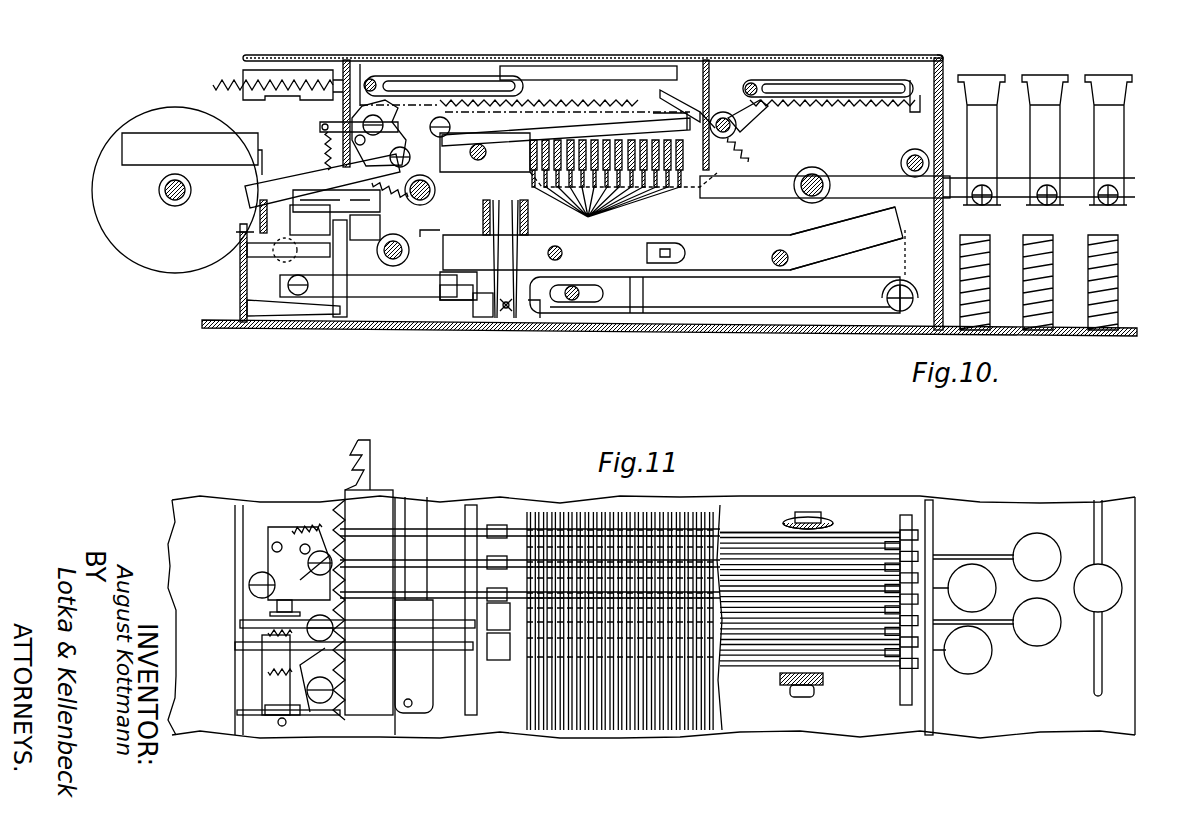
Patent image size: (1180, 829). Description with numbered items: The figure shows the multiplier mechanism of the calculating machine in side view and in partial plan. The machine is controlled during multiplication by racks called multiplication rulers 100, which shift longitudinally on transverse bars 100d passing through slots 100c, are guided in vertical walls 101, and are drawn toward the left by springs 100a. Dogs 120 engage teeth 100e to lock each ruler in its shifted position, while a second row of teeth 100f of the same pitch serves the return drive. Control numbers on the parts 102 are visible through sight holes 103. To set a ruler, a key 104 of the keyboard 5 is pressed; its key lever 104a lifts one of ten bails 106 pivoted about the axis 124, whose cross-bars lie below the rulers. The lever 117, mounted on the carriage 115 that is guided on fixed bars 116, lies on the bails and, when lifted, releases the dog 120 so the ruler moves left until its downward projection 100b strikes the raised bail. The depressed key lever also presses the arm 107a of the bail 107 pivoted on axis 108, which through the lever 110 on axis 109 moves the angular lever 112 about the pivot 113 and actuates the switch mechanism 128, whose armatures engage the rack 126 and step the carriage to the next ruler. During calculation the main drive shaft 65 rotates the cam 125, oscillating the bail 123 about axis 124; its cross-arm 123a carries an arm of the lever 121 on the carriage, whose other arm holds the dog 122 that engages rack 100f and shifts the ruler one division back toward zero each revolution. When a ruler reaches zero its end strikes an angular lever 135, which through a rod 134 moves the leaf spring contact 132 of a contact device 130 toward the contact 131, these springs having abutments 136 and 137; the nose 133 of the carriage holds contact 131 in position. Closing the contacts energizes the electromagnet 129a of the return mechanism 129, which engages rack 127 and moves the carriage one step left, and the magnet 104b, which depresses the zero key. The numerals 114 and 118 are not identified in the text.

In FIG. 10, the keyboard 5 is at (1087, 64).
In FIG. 11, the keyboard 5 is at (1061, 521).
In FIG. 10, the main drive shaft 65 is at (168, 198).
In FIG. 10, the multiplication rulers 100 is at (640, 88).
In FIG. 11, the multiplication rulers 100 is at (440, 528).
In FIG. 10, the springs 100a is at (218, 85).
In FIG. 10, the downwardly directed projection 100b is at (722, 145).
In FIG. 10, the slots 100c is at (410, 76).
In FIG. 10, the transverse bars 100d is at (372, 80).
In FIG. 10, the teeth 100e is at (838, 108).
In FIG. 10, the second row of teeth 100f is at (462, 98).
In FIG. 10, the vertical walls 101 is at (345, 62).
In FIG. 10, the parts carrying control numbers 102 is at (525, 89).
In FIG. 10, the sight holes 103 is at (503, 67).
In FIG. 10, the keys 104 is at (1039, 166).
In FIG. 10, the key lever 104a is at (825, 185).
In FIG. 11, the key lever 104a is at (800, 555).
In FIG. 10, the magnet 104b is at (1112, 285).
In FIG. 10, the bails 106 is at (606, 187).
In FIG. 11, the bails 106 is at (670, 705).
In FIG. 10, the bail 107 is at (846, 238).
In FIG. 10, the arm of the bail 107a is at (902, 171).
In FIG. 10, the axis 108 is at (778, 250).
In FIG. 10, the axis 109 is at (566, 253).
In FIG. 10, the lever 110 is at (673, 238).
In FIG. 10, the angular lever 112 is at (376, 288).
In FIG. 11, the angular lever 112 is at (272, 708).
In FIG. 10, the pivot 113 is at (293, 296).
In FIG. 10, the plate 114 is at (262, 312).
In FIG. 10, the carriage 115 is at (420, 262).
In FIG. 11, the carriage 115 is at (400, 640).
In FIG. 10, the fixed bars 116 is at (398, 244).
In FIG. 10, the lever 117 is at (560, 129).
In FIG. 11, the lever 117 is at (455, 650).
In FIG. 10, the screw 118 is at (418, 156).
In FIG. 10, the dogs 120 is at (740, 112).
In FIG. 10, the lever 121 is at (325, 156).
In FIG. 11, the lever 121 is at (400, 648).
In FIG. 10, the dog 122 is at (322, 126).
In FIG. 11, the dog 122 is at (290, 660).
In FIG. 10, the bail 123 is at (192, 154).
In FIG. 10, the cross-arm 123a is at (262, 258).
In FIG. 10, the axis 124 is at (477, 162).
In FIG. 10, the cam 125 is at (160, 240).
In FIG. 10, the rack of the carriage 126 is at (370, 186).
In FIG. 11, the rack of the carriage 126 is at (372, 505).
In FIG. 10, the rack of the carriage 127 is at (412, 265).
In FIG. 11, the rack of the carriage 127 is at (362, 450).
In FIG. 11, the switch mechanism 128 is at (285, 726).
In FIG. 11, the return mechanism 129 is at (280, 558).
In FIG. 10, the electromagnet 129a is at (238, 320).
In FIG. 11, the electromagnet 129a is at (280, 616).
In FIG. 10, the contact devices 130 is at (505, 312).
In FIG. 10, the leaf spring contact 131 is at (495, 318).
In FIG. 10, the leaf spring contact 132 is at (515, 318).
In FIG. 10, the nose 133 is at (478, 302).
In FIG. 10, the rods 134 is at (690, 298).
In FIG. 11, the rods 134 is at (748, 538).
In FIG. 10, the angular levers 135 is at (945, 78).
In FIG. 11, the angular levers 135 is at (930, 520).
In FIG. 10, the abutment 136 is at (466, 294).
In FIG. 10, the abutment 137 is at (535, 315).